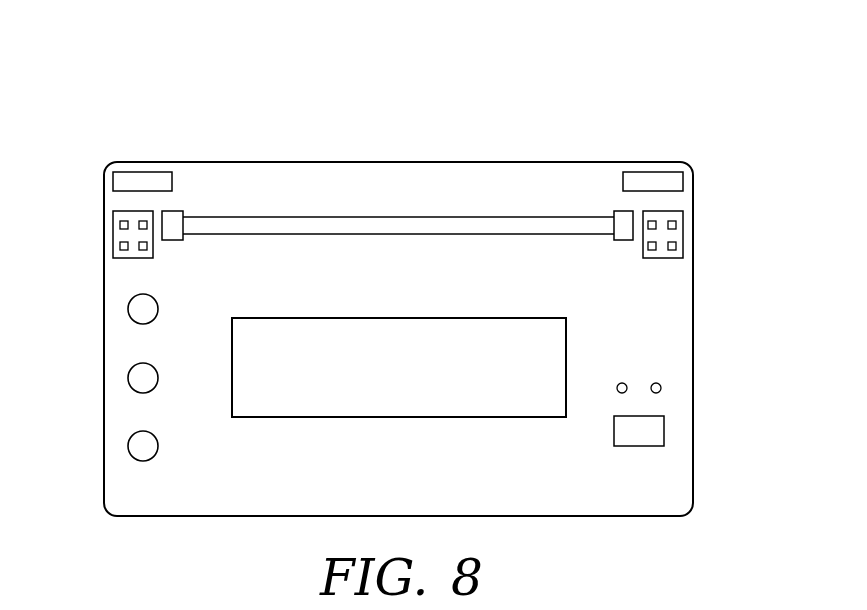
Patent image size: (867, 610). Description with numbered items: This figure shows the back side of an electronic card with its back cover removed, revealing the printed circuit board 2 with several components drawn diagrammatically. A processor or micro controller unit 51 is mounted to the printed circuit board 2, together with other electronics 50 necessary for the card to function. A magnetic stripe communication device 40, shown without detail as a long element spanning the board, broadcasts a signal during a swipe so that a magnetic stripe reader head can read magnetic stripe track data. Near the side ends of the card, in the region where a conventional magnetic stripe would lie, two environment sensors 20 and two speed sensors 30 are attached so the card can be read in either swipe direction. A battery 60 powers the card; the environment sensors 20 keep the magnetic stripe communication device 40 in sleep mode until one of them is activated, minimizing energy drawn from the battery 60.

The printed circuit board 2 is at (543, 170).
The environment sensors 20 is at (120, 236).
The speed sensors 30 is at (122, 185).
The magnetic stripe communication device 40 is at (311, 224).
The other electronics 50 is at (637, 383).
The processor or micro controller unit 51 is at (652, 438).
The battery 60 is at (413, 378).